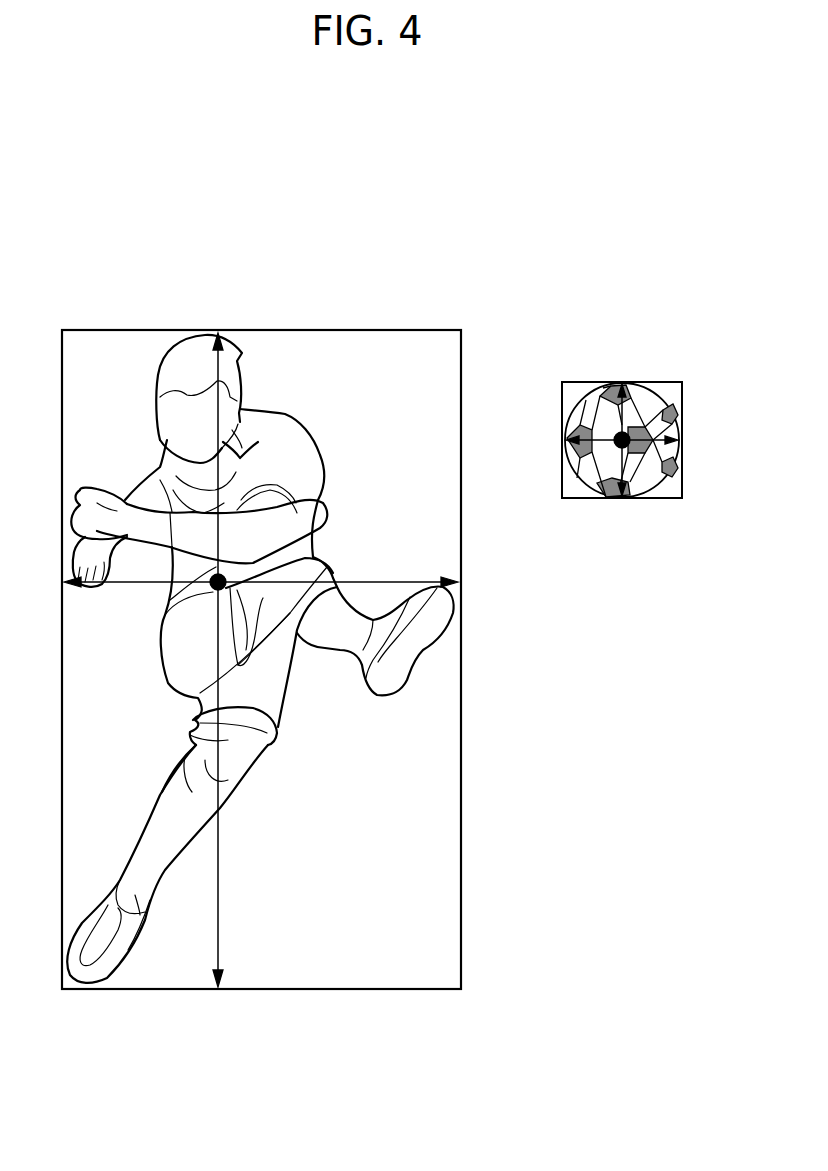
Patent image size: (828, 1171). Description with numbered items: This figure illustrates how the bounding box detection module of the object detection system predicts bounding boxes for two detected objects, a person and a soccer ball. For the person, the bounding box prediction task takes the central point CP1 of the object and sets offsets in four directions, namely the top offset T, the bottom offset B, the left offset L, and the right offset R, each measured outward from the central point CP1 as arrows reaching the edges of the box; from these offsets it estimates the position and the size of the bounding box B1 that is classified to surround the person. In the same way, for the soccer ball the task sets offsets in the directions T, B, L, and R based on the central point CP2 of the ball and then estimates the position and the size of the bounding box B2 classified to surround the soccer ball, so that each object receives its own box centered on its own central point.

The bounding box B1 is at (274, 330).
The bounding box B2 is at (624, 382).
The central point CP1 is at (212, 598).
The central point CP2 is at (609, 452).
The offset in the top direction T is at (225, 457).
The offset in the bottom direction B is at (226, 784).
The offset in the left direction L is at (141, 597).
The offset in the right direction R is at (338, 597).